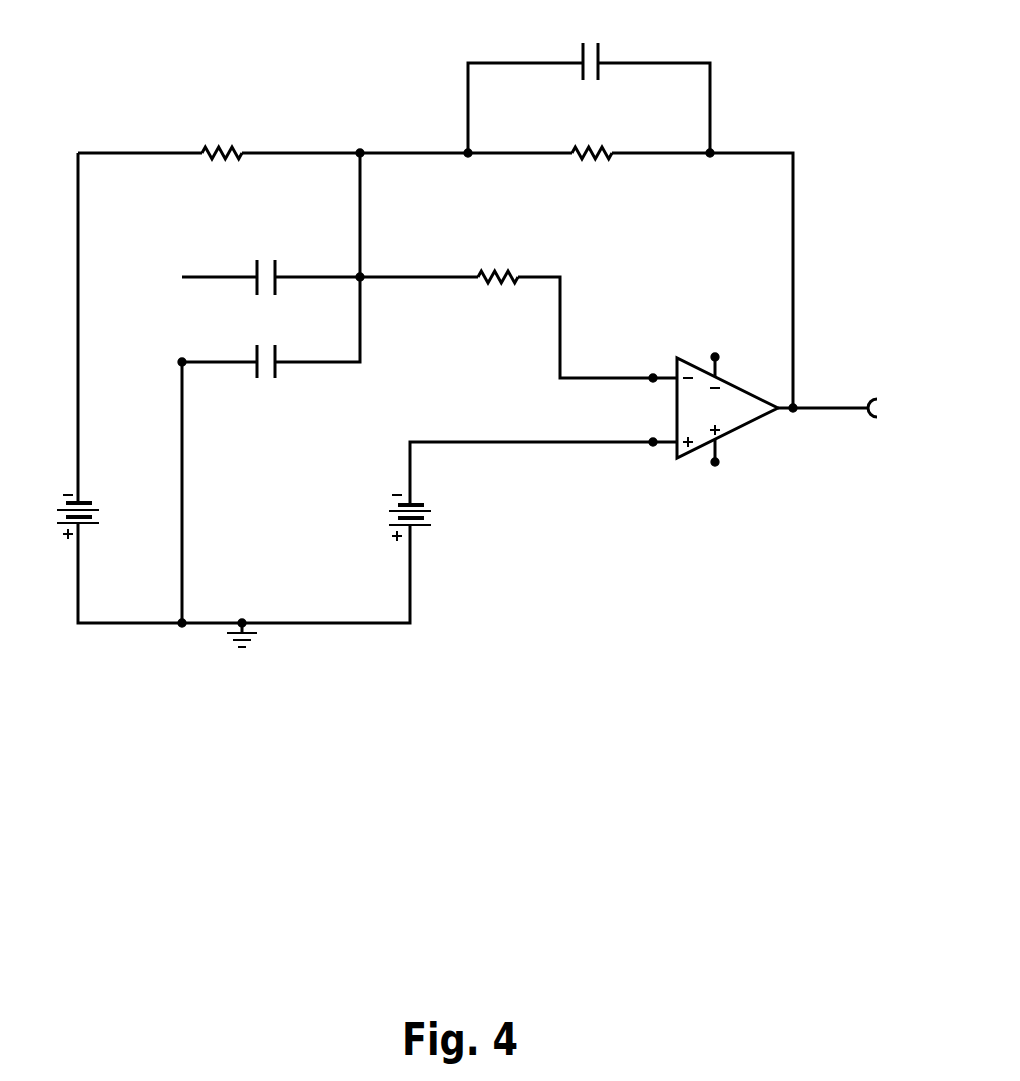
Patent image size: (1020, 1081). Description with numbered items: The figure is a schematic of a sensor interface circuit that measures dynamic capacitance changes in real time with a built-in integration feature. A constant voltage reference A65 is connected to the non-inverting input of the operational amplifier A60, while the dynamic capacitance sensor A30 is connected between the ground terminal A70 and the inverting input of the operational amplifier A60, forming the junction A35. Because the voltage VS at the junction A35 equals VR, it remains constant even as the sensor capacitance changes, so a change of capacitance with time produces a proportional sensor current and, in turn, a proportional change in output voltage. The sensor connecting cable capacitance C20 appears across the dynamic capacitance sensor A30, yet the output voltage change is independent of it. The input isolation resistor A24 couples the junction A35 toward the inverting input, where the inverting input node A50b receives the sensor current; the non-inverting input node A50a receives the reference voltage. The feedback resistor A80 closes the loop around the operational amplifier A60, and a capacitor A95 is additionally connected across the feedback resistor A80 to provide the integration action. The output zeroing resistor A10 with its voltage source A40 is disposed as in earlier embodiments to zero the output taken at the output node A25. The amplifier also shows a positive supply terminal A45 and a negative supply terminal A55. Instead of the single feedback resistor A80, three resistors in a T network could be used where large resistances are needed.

The output zeroing resistor A10 is at (182, 137).
The capacitor A95 is at (554, 47).
The feedback resistor A80 is at (552, 137).
The junction A35 is at (371, 215).
The sensor connecting cable capacitance C20 is at (227, 264).
The dynamic capacitance sensor A30 is at (297, 360).
The input isolation resistor A24 is at (532, 263).
The positive supply terminal of amplifier A45 is at (678, 351).
The inverting input node of amplifier A50b is at (609, 393).
The non-inverting input node of amplifier A50a is at (609, 454).
The negative supply terminal of amplifier A55 is at (678, 467).
The operational amplifier A60 is at (749, 417).
The output node V0 A25 is at (848, 421).
The voltage source A40 is at (95, 526).
The constant voltage reference A65 is at (425, 526).
The ground terminal A70 is at (285, 638).